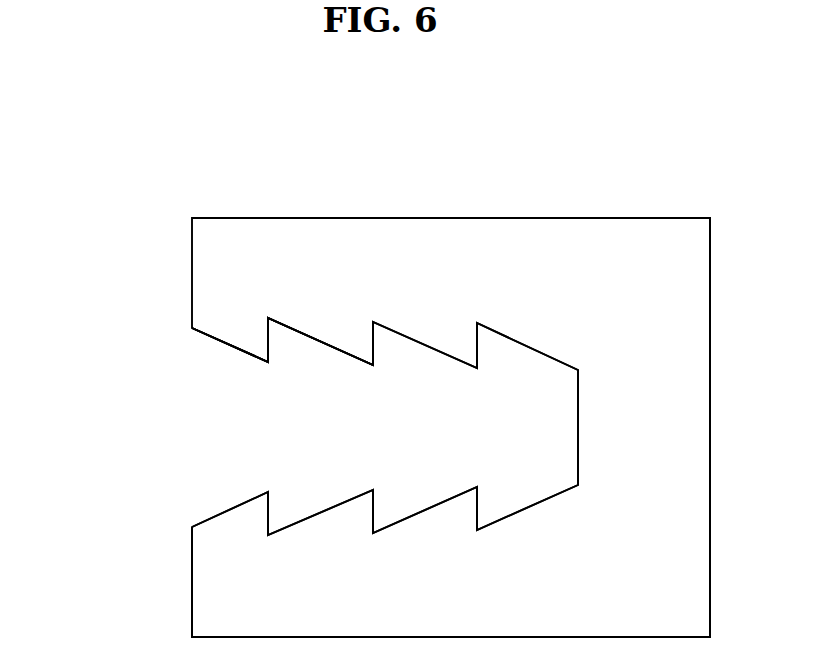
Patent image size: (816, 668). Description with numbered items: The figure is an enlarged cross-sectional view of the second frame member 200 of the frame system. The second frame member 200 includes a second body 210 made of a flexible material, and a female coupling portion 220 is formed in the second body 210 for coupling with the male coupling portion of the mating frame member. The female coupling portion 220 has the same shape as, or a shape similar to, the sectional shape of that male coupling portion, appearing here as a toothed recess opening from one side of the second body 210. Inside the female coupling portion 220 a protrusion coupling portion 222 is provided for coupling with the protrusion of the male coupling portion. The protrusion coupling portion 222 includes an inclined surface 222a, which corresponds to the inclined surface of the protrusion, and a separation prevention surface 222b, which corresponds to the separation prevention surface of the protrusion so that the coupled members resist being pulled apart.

The second frame member 200 is at (248, 190).
The second body 210 is at (540, 238).
The female coupling portion 220 is at (243, 445).
The protrusion coupling portion 222 is at (92, 340).
The inclined surface 222a is at (223, 343).
The separation prevention surface 222b is at (270, 340).